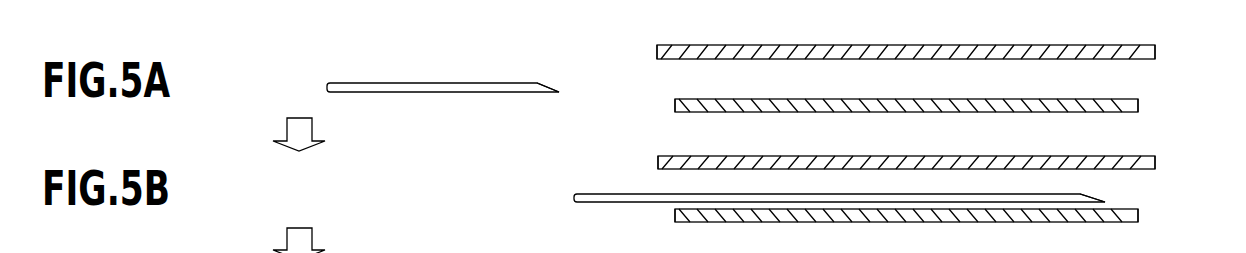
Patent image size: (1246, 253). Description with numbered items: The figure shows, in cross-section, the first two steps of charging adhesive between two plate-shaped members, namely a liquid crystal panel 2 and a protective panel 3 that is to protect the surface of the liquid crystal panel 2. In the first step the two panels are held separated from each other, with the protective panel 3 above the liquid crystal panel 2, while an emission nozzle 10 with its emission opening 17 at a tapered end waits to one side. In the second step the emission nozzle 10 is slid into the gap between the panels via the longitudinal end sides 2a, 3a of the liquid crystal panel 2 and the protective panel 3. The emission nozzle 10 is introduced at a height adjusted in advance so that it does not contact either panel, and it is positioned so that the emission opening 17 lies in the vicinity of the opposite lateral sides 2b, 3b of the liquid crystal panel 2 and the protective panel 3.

In FIG. 5A, the liquid crystal panel 2 is at (1012, 103).
In FIG. 5B, the liquid crystal panel 2 is at (940, 210).
In FIG. 5A, the longitudinal end side of the liquid crystal panel 2a is at (675, 105).
In FIG. 5B, the longitudinal end side of the liquid crystal panel 2a is at (675, 212).
In FIG. 5A, the opposite lateral side of the liquid crystal panel 2b is at (1140, 105).
In FIG. 5B, the opposite lateral side of the liquid crystal panel 2b is at (1140, 215).
In FIG. 5A, the protective panel 3 is at (1012, 52).
In FIG. 5B, the protective panel 3 is at (940, 161).
In FIG. 5A, the longitudinal end side of the protective panel 3a is at (657, 50).
In FIG. 5B, the longitudinal end side of the protective panel 3a is at (658, 157).
In FIG. 5A, the opposite lateral side of the protective panel 3b is at (1157, 51).
In FIG. 5B, the opposite lateral side of the protective panel 3b is at (1157, 162).
In FIG. 5A, the emission nozzle 10 is at (448, 83).
In FIG. 5B, the emission nozzle 10 is at (779, 195).
In FIG. 5A, the emission opening 17 is at (552, 83).
In FIG. 5B, the emission opening 17 is at (1095, 197).